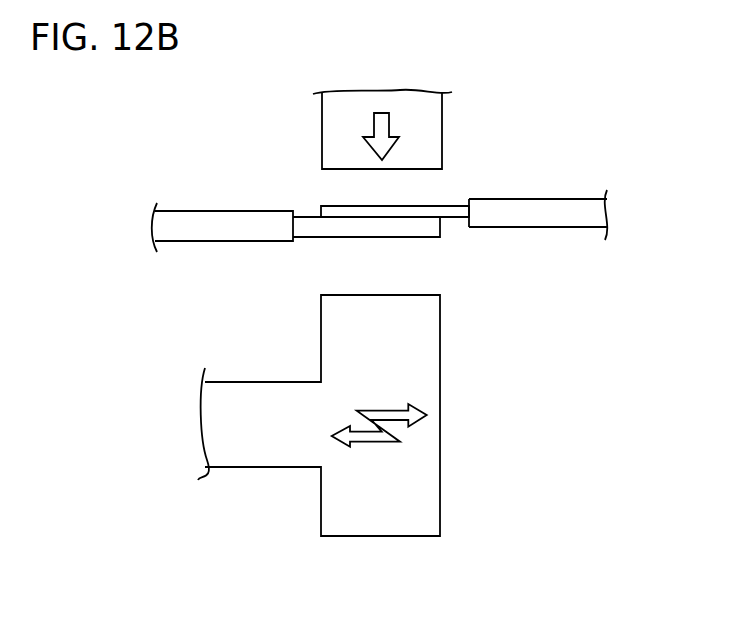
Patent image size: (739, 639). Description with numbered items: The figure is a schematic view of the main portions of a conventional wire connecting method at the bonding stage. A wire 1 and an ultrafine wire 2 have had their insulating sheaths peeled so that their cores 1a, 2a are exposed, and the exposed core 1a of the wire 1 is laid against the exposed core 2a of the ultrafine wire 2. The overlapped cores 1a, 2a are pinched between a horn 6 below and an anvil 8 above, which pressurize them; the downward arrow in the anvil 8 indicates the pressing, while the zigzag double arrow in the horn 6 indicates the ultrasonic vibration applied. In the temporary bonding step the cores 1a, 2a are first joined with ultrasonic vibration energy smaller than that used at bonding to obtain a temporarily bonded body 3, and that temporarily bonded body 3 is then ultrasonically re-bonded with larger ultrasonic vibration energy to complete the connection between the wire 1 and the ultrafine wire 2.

The wire 1 is at (210, 227).
The core 1a is at (313, 228).
The ultrafine wire 2 is at (545, 213).
The core 2a is at (450, 205).
The temporarily bonded body 3 is at (460, 258).
The horn 6 is at (375, 515).
The anvil 8 is at (425, 113).